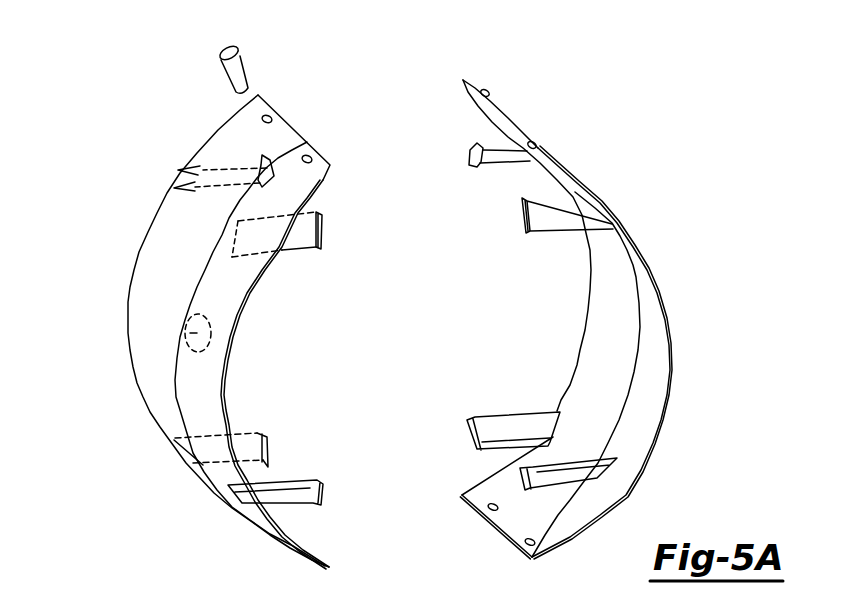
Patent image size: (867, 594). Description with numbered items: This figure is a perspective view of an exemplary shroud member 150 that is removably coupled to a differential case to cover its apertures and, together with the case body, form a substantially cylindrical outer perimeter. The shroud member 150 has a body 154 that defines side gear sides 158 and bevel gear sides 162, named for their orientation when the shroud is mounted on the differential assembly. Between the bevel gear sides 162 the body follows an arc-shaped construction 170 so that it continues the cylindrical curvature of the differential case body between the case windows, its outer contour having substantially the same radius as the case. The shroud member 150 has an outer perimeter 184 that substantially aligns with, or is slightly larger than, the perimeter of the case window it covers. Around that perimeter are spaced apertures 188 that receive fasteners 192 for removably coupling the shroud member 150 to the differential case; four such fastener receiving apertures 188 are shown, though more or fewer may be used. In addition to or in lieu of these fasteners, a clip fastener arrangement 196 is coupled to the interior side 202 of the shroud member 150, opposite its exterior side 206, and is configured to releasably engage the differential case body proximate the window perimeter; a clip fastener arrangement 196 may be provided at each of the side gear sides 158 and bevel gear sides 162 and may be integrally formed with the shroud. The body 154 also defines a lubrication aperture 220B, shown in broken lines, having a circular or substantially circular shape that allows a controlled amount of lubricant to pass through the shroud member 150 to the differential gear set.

The shroud member 150 is at (414, 247).
The body 154 is at (403, 331).
The side gear sides 158 is at (434, 342).
The bevel gear sides 162 is at (429, 337).
The arc-shaped construction 170 is at (365, 354).
The outer perimeter 184 is at (477, 357).
The apertures 188 is at (412, 83).
The fastener 192 is at (190, 68).
The clip fastener arrangement 196 is at (395, 324).
The interior side 202 is at (604, 368).
The exterior side 206 is at (170, 281).
The lubrication aperture 220B is at (133, 319).